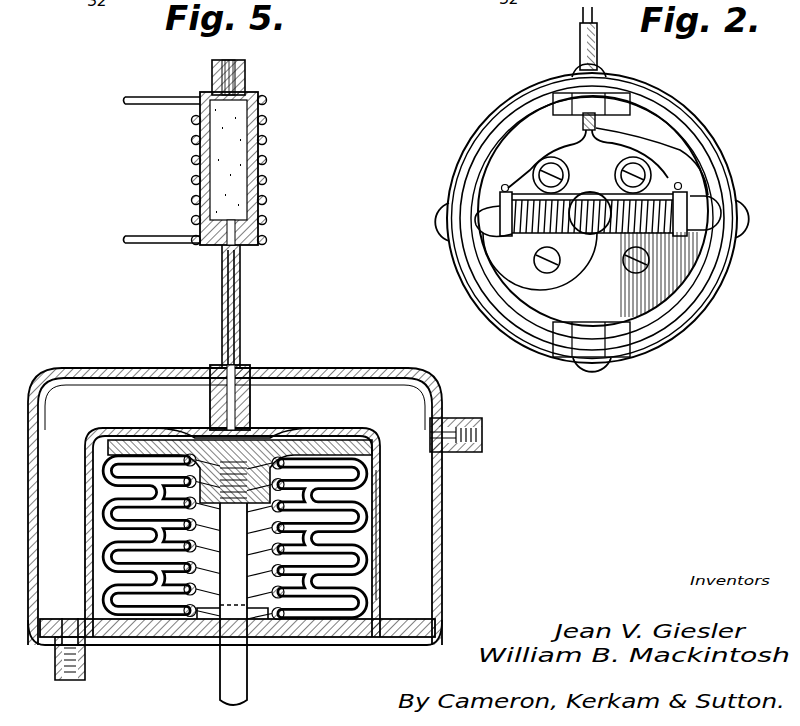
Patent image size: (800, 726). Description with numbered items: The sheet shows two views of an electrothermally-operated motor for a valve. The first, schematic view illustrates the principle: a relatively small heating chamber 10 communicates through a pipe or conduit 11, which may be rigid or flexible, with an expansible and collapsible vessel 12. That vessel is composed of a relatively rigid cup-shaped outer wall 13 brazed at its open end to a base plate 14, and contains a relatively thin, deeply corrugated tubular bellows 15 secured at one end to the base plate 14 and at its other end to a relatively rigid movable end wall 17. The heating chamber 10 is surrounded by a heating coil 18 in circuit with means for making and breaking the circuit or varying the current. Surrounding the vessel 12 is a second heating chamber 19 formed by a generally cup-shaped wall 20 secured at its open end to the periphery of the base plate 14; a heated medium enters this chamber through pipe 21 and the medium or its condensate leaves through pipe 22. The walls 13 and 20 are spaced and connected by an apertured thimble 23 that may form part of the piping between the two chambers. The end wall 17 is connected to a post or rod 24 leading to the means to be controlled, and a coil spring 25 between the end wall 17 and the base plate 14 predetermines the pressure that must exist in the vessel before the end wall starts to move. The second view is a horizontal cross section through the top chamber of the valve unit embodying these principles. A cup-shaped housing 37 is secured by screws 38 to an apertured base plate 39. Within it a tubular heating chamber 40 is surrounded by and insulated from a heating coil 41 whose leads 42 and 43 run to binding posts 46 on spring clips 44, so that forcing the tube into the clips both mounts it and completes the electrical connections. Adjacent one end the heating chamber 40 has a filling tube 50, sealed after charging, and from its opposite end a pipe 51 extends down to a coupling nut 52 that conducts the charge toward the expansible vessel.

In FIG. 5, the heating chamber 10 is at (242, 167).
In FIG. 5, the pipe or conduit 11 is at (240, 305).
In FIG. 5, the expansible and collapsible vessel 12 is at (375, 436).
In FIG. 5, the cup-shaped outer wall 13 is at (380, 520).
In FIG. 5, the base plate 14 is at (390, 625).
In FIG. 5, the bellows 15 is at (350, 585).
In FIG. 5, the movable end wall 17 is at (285, 455).
In FIG. 5, the heating coil 18 is at (265, 115).
In FIG. 5, the heating chamber 19 is at (295, 385).
In FIG. 5, the cup-shaped wall 20 is at (140, 358).
In FIG. 5, the pipe 21 is at (470, 418).
In FIG. 5, the pipe 22 is at (58, 658).
In FIG. 5, the thimble 23 is at (210, 400).
In FIG. 5, the post or rod 24 is at (222, 660).
In FIG. 5, the coil spring 25 is at (295, 582).
In FIG. 2, the housing 37 is at (660, 340).
In FIG. 2, the screws 38 is at (750, 232).
In FIG. 2, the base plate 39 is at (700, 295).
In FIG. 2, the heating chamber 40 is at (600, 236).
In FIG. 2, the heating coil 41 is at (532, 233).
In FIG. 2, the lead 42 is at (610, 3).
In FIG. 2, the lead 43 is at (580, 25).
In FIG. 2, the spring clips 44 is at (500, 210).
In FIG. 2, the binding posts 46 is at (505, 185).
In FIG. 2, the filling tube 50 is at (472, 225).
In FIG. 2, the pipe 51 is at (715, 200).
In FIG. 2, the coupling nut 52 is at (590, 192).